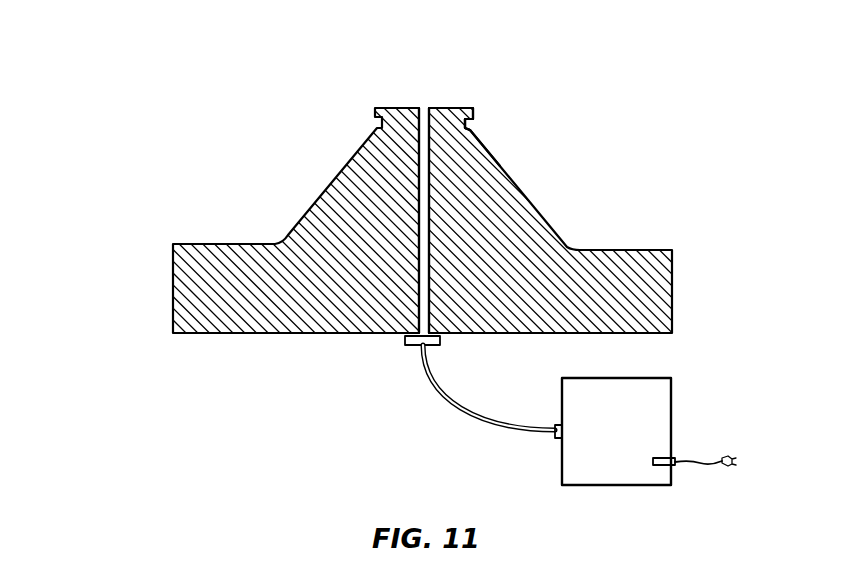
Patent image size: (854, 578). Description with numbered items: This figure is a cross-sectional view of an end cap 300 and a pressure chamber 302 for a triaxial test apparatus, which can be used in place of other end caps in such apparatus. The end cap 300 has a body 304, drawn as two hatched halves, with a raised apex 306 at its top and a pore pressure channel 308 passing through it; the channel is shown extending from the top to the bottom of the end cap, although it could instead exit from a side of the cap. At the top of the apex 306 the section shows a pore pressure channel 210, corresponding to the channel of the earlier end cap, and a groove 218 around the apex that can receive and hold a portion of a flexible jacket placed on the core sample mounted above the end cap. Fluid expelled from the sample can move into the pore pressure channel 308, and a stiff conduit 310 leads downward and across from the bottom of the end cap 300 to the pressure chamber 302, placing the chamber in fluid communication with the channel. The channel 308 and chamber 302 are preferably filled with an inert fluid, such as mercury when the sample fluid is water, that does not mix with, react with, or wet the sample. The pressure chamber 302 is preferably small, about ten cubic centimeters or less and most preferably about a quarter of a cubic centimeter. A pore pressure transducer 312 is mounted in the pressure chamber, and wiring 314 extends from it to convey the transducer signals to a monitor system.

The end cap 300 is at (170, 275).
The pressure chamber 302 is at (672, 393).
The body 304 is at (592, 260).
The apex 306 is at (391, 108).
The pore pressure channel 308 is at (417, 153).
The pore pressure channel 210 is at (430, 122).
The groove 218 is at (470, 128).
The stiff conduit 310 is at (478, 417).
The pore pressure transducer 312 is at (656, 457).
The wiring 314 is at (692, 465).